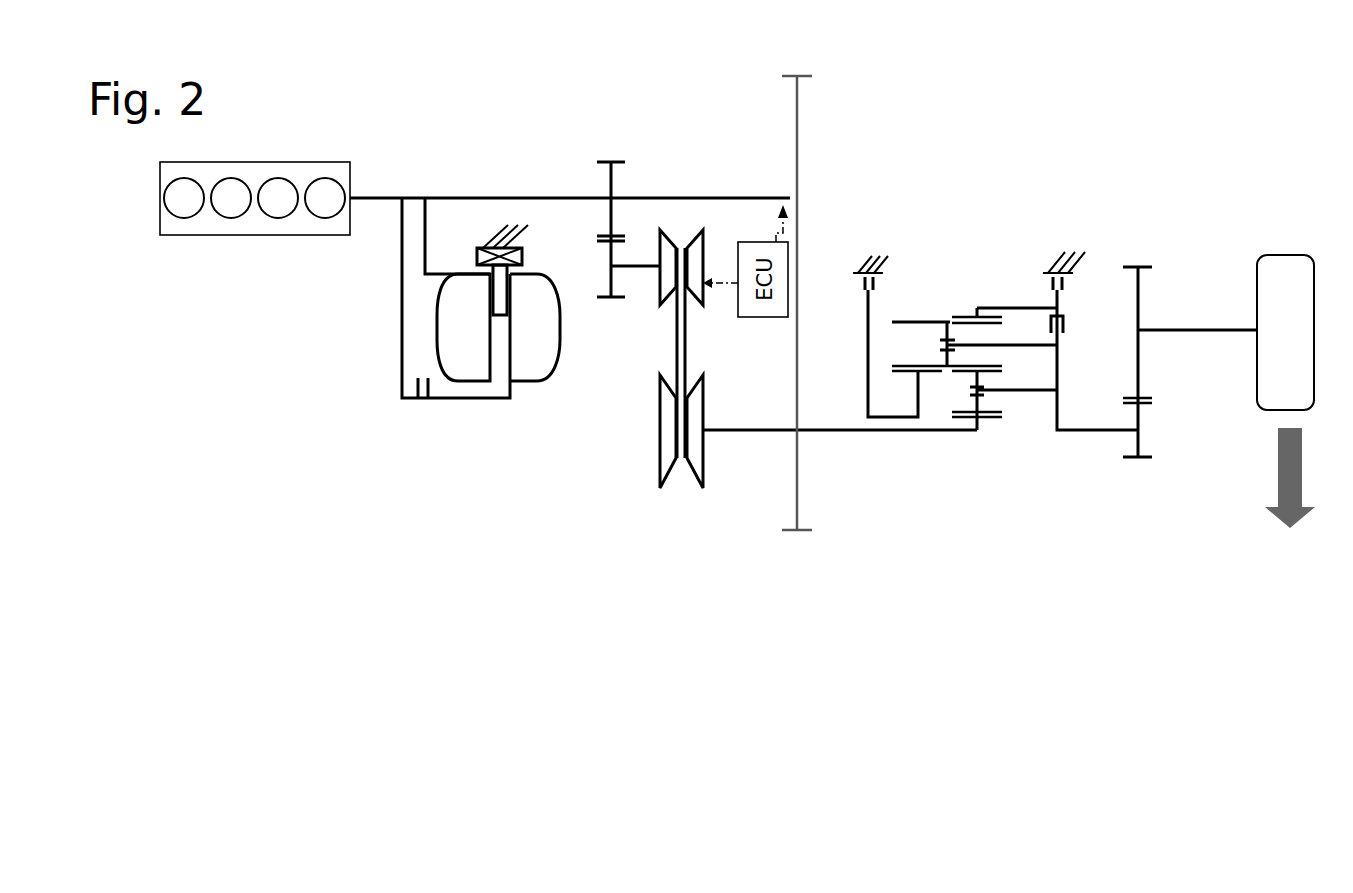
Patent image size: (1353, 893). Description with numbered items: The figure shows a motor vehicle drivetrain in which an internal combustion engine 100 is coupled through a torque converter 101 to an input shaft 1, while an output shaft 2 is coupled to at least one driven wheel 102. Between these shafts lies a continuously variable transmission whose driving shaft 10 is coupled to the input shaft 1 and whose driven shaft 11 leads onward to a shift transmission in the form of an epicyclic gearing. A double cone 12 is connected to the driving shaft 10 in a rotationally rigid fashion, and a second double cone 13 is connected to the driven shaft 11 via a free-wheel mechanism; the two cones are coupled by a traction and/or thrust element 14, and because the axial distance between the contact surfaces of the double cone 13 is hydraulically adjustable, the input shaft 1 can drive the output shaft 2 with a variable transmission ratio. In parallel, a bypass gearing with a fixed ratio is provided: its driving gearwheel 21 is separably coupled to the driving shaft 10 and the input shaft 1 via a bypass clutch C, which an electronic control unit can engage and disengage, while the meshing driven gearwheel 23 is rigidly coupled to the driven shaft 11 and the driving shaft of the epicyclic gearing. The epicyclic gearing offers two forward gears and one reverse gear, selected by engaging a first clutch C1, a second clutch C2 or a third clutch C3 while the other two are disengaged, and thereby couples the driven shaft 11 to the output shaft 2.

The input shaft 1 is at (482, 199).
The output shaft 2 is at (1170, 332).
The driving shaft 10 is at (628, 262).
The driven shaft 11 is at (718, 432).
The double cone 12 is at (667, 283).
The double cone 13 is at (693, 413).
The traction and/or thrust element 14 is at (682, 313).
The driving gearwheel 21 is at (795, 157).
The driven gearwheel 23 is at (800, 475).
The internal combustion engine 100 is at (225, 223).
The torque converter 101 is at (490, 433).
The driven wheel 102 is at (1277, 255).
The bypass clutch C is at (787, 195).
The first clutch C1 is at (875, 283).
The second clutch C2 is at (1063, 320).
The third clutch C3 is at (1052, 283).